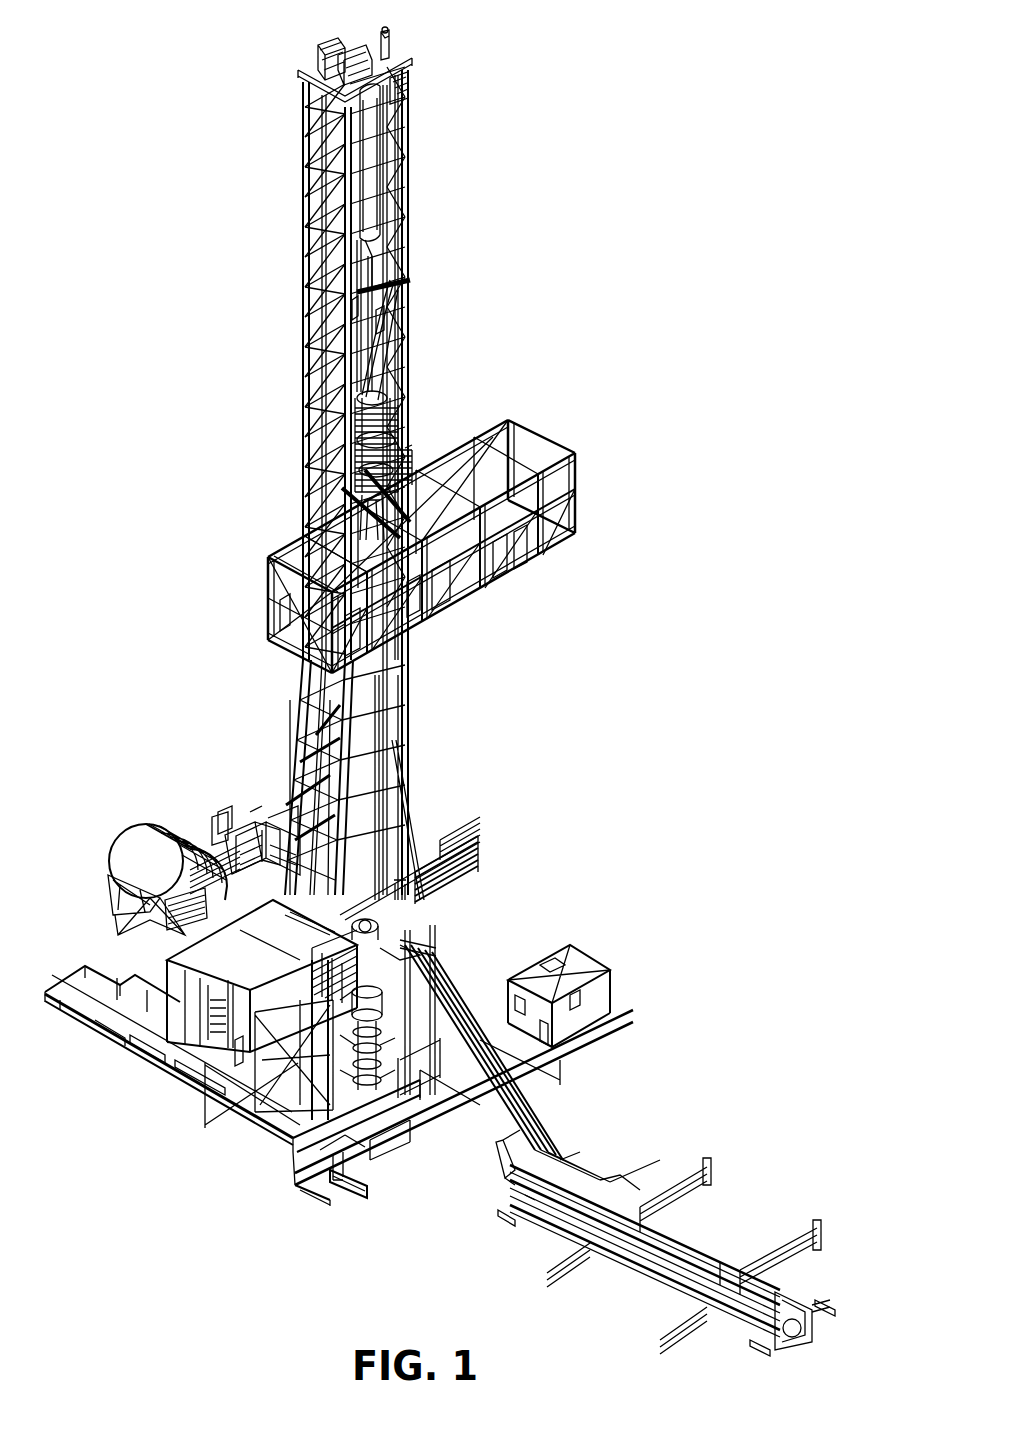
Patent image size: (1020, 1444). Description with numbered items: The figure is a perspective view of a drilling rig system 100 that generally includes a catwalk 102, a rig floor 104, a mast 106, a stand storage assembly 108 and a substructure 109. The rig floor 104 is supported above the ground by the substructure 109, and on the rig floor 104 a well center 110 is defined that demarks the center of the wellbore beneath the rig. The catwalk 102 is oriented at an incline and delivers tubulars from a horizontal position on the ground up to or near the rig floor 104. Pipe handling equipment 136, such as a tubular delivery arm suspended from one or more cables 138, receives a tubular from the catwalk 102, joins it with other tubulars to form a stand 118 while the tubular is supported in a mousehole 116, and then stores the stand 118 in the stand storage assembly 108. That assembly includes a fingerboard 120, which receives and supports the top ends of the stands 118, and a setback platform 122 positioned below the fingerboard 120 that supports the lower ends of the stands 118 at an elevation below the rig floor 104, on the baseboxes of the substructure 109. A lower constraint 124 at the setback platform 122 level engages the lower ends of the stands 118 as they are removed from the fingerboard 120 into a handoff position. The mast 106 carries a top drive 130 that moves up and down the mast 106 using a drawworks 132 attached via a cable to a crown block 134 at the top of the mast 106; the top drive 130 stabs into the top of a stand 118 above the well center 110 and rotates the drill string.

The drilling rig system 100 is at (172, 156).
The catwalk 102 is at (505, 943).
The rig floor 104 is at (450, 867).
The mast 106 is at (407, 238).
The stand storage assembly 108 is at (566, 431).
The substructure 109 is at (187, 1125).
The well center 110 is at (363, 910).
The mousehole 116 is at (410, 953).
The stand 118 is at (410, 727).
The fingerboard 120 is at (535, 547).
The setback platform 122 is at (300, 1153).
The lower constraint 124 is at (423, 1063).
The top drive 130 is at (380, 407).
The drawworks 132 is at (150, 832).
The crown block 134 is at (380, 40).
The pipe handling equipment 136 is at (375, 340).
The cable 138 is at (370, 172).